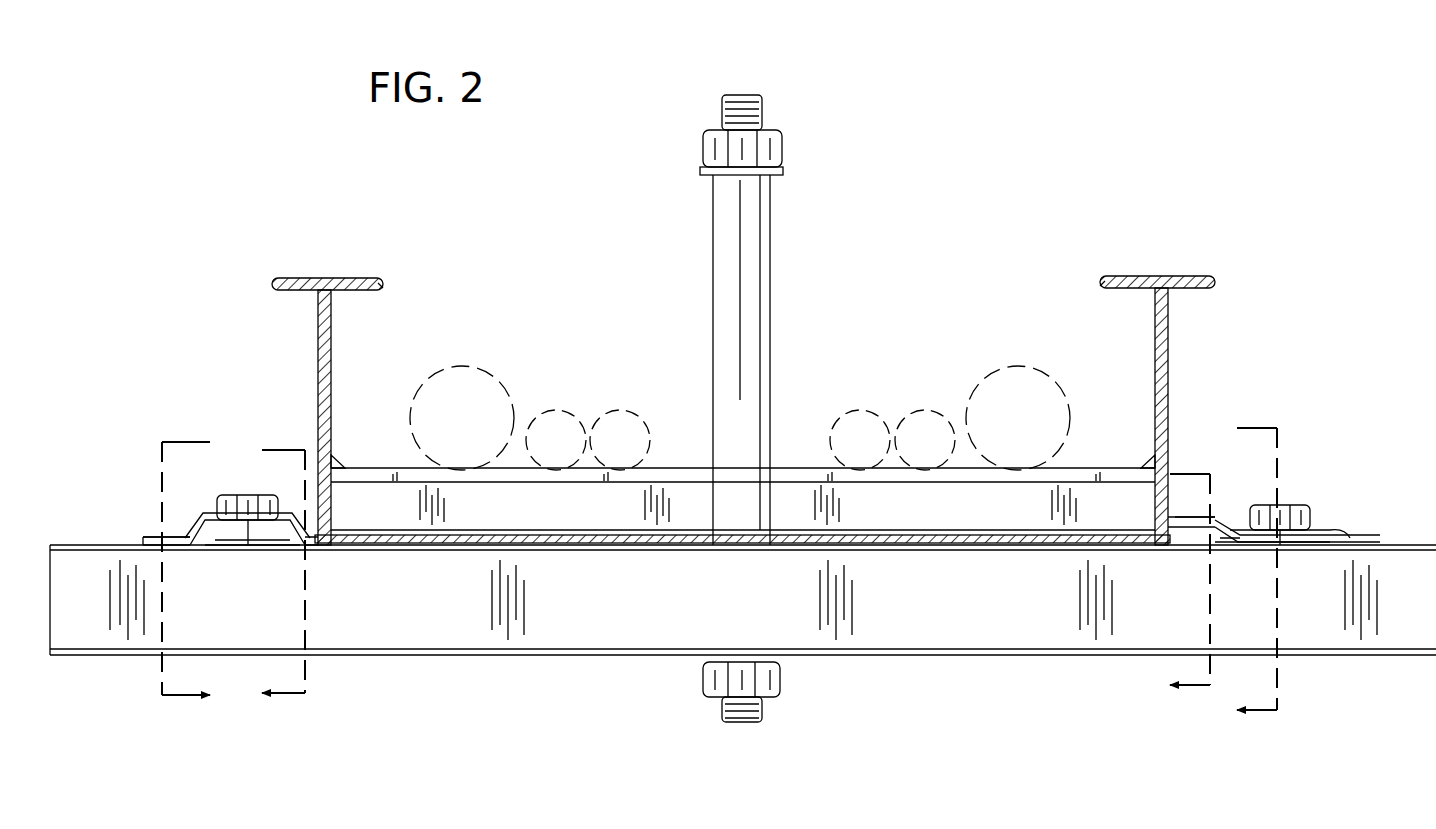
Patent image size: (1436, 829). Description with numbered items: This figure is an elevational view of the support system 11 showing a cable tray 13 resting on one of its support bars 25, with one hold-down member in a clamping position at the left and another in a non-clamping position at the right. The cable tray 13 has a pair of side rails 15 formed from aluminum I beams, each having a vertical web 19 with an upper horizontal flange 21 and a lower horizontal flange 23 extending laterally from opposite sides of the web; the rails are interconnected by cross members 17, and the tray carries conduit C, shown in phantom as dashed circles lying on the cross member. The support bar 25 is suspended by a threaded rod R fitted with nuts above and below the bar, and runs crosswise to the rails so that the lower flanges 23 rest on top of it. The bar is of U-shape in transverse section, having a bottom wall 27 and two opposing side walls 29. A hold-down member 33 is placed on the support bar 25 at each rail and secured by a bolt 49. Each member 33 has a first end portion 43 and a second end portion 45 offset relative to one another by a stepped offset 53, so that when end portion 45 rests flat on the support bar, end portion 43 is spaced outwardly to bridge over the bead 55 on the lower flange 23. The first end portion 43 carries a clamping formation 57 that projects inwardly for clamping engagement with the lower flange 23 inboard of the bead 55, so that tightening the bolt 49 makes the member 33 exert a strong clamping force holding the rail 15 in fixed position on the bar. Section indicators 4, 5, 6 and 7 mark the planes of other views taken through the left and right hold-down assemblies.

The support system 11 is at (1315, 258).
The cable tray 13 is at (734, 377).
The side rail 15 is at (378, 283).
The cross member 17 is at (790, 468).
The vertical web 19 is at (318, 330).
The upper horizontal flange 21 is at (302, 280).
The lower horizontal flange 23 is at (325, 548).
The support bar 25 is at (1412, 657).
The bottom wall 27 is at (550, 657).
The side wall 29 is at (975, 630).
The hold-down member 33 is at (196, 513).
The first end portion 43 is at (296, 510).
The second end portion 45 is at (152, 537).
The bolt 49 is at (225, 496).
The offset 53 is at (210, 548).
The bead 55 is at (275, 548).
The clamping formation 57 is at (318, 520).
The rod R is at (756, 115).
The conduit C is at (615, 410).
The section line 4 is at (283, 574).
The section line 5 is at (186, 569).
The section line 6 is at (1190, 581).
The section line 7 is at (1257, 571).